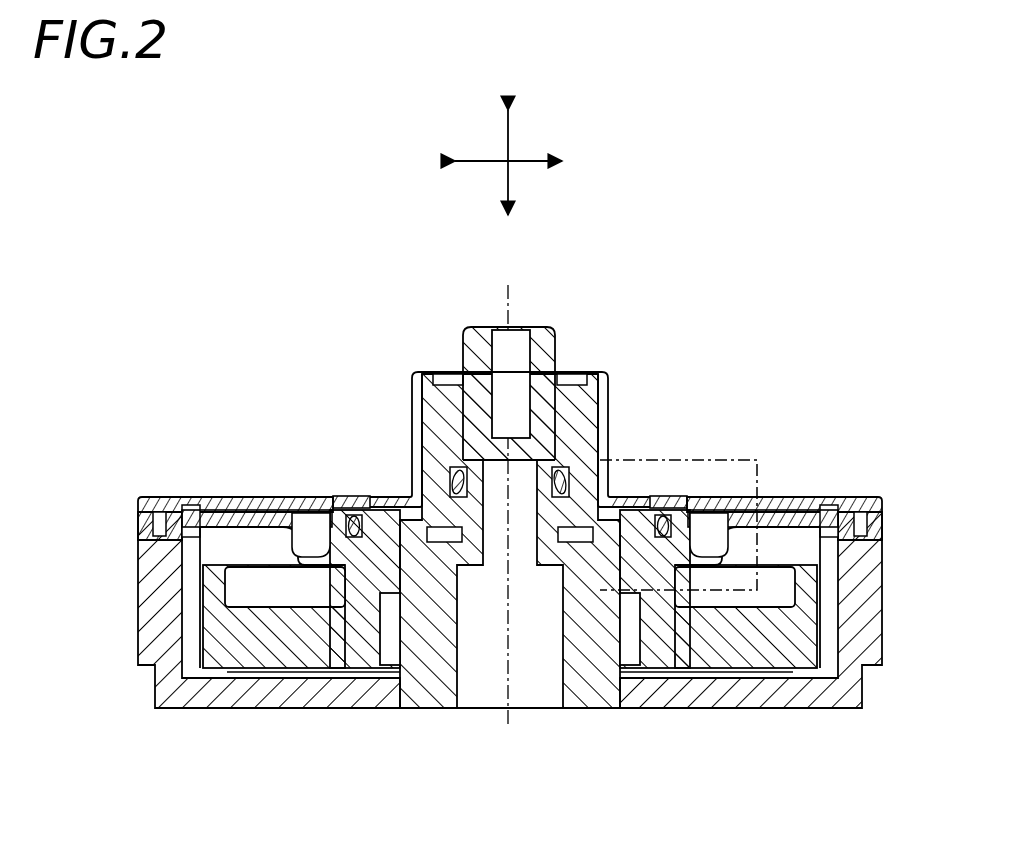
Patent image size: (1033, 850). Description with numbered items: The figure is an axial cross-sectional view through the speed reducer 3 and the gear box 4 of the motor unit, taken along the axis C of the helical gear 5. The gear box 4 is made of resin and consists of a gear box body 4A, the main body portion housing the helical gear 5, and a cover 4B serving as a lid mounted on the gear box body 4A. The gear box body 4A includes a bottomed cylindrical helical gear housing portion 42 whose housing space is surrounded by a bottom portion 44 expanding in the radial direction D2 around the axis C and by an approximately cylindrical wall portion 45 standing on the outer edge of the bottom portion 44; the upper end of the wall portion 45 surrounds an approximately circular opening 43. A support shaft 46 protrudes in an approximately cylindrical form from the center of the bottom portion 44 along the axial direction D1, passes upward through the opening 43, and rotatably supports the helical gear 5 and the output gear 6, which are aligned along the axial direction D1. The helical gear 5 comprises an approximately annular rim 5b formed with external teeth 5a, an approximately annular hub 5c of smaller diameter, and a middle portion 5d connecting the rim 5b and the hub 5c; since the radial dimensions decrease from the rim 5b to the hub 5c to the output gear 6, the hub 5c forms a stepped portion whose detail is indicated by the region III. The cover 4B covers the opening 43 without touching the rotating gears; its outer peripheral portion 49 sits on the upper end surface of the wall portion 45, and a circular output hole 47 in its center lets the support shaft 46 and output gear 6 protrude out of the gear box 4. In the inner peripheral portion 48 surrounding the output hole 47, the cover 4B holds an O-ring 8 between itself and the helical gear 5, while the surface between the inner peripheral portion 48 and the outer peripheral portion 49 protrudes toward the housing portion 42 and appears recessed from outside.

The motor 3 is at (506, 471).
The gear box 4 is at (510, 439).
The gear box body 4A is at (418, 722).
The helical gear housing portion 42 is at (477, 662).
The cover 4B is at (780, 485).
The helical gear 5 is at (561, 588).
The external teeth 5a is at (812, 596).
The rim 5b is at (797, 560).
The hub 5c is at (622, 530).
The middle portion 5d is at (718, 655).
The output gear 6 is at (614, 383).
The O-ring 8 is at (668, 516).
The opening 43 is at (198, 515).
The bottom portion 44 is at (303, 703).
The wall portion 45 is at (148, 606).
The support shaft 46 is at (555, 350).
The output hole 47 is at (386, 500).
The inner peripheral portion 48 is at (354, 498).
The outer peripheral portion 49 is at (150, 500).
The axial direction D1 is at (512, 140).
The radial direction D2 is at (525, 163).
The axis C is at (507, 494).
The section III is at (725, 448).